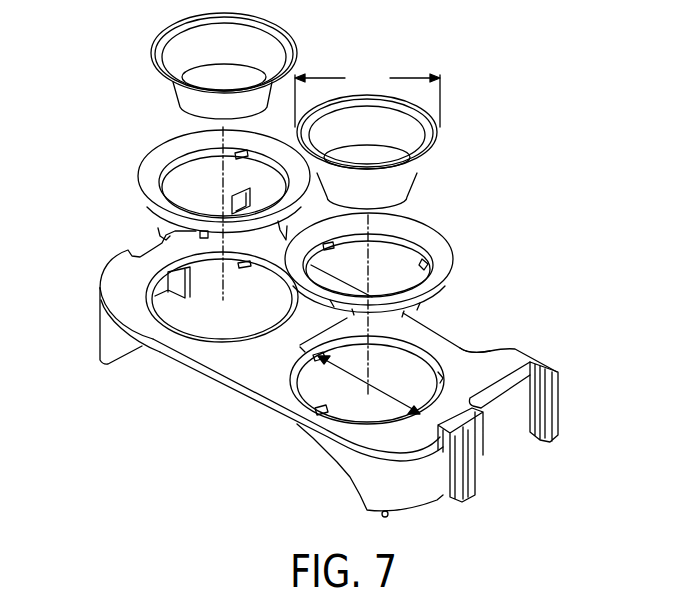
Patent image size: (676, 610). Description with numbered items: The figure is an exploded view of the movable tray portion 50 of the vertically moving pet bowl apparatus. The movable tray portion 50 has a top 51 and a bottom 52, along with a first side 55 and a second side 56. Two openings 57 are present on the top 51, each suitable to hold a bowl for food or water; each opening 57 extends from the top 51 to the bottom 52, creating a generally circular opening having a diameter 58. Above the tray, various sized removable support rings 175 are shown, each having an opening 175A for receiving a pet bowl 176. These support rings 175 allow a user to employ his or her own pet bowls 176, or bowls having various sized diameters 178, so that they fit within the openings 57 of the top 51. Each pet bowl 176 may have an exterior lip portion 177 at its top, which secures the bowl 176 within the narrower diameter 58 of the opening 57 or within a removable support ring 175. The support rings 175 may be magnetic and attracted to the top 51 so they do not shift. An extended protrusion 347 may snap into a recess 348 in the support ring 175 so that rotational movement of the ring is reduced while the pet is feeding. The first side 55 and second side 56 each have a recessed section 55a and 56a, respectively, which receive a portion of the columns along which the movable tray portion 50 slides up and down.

The movable tray portion 50 is at (293, 405).
The top 51 is at (460, 356).
The bottom 52 is at (205, 373).
The first side 55 is at (100, 288).
The recessed section 55a is at (222, 215).
The second side 56 is at (422, 493).
The recessed section 56a is at (502, 395).
The opening 57 is at (200, 328).
The diameter 58 is at (370, 390).
The removable support ring 175 is at (327, 206).
The opening 175A is at (198, 172).
The pet bowl 176 is at (272, 50).
The exterior lip portion 177 is at (432, 156).
The diameter 178 is at (367, 96).
The extended protrusion 347 is at (326, 410).
The recess 348 is at (300, 345).